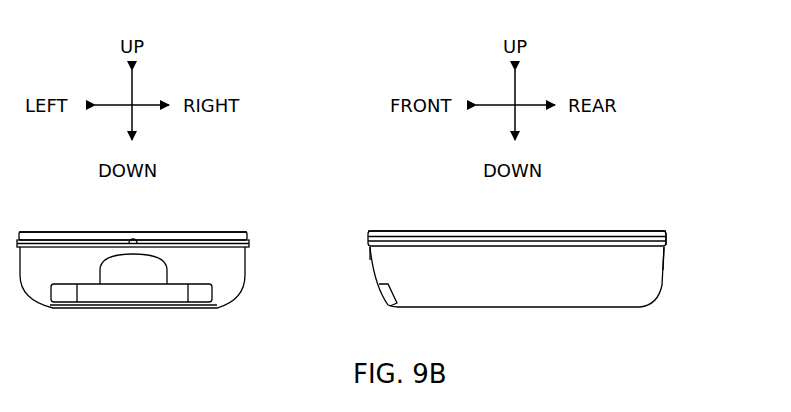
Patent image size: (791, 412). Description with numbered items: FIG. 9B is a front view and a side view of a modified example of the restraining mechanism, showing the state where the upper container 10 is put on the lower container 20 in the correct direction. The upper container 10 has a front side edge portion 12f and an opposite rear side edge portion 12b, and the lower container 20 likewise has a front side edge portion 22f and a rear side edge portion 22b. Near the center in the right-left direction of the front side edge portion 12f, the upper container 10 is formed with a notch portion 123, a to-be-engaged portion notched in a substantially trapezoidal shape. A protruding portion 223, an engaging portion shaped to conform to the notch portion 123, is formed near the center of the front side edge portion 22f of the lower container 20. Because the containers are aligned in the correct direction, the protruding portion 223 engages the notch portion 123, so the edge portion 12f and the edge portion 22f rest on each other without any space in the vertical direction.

The upper container 10 is at (245, 222).
The front side edge portion 12f is at (65, 232).
The rear edge of lid 12b is at (668, 232).
The lower container 20 is at (239, 306).
The front side edge portion 22f is at (60, 247).
The rear wall of body 22b is at (668, 248).
The notch portion 123 is at (133, 238).
The protruding portion 223 is at (130, 243).